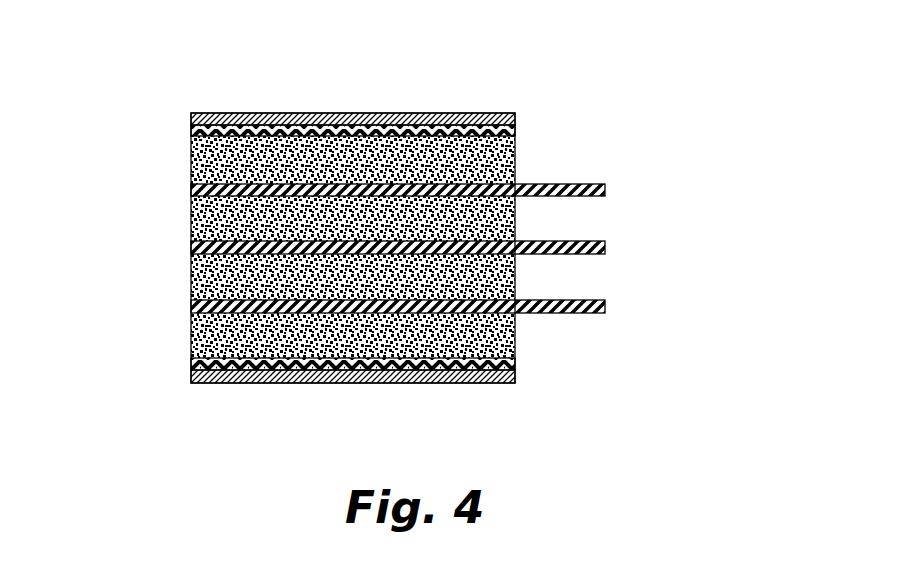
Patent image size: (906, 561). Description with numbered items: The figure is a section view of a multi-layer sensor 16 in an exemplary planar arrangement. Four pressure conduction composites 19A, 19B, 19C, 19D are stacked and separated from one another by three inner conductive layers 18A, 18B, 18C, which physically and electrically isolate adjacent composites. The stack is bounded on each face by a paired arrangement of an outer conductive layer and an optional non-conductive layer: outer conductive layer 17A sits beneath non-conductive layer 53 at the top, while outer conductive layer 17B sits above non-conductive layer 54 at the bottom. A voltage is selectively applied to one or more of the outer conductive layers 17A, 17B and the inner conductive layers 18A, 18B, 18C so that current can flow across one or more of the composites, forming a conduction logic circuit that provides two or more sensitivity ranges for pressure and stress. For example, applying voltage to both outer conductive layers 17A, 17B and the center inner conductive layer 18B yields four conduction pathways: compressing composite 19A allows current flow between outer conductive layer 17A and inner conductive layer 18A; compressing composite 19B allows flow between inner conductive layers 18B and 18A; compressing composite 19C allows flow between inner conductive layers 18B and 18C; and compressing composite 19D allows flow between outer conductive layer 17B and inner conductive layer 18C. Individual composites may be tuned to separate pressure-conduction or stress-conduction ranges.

The multi-layer sensor 16 is at (160, 118).
The non-conductive layer 53 is at (343, 105).
The outer conductive layer 17A is at (509, 119).
The pressure conduction composite 19A is at (182, 152).
The inner conductive layer 18A is at (599, 180).
The pressure conduction composite 19B is at (180, 207).
The inner conductive layer 18B is at (599, 239).
The pressure conduction composite 19C is at (180, 269).
The inner conductive layer 18C is at (599, 297).
The pressure conduction composite 19D is at (182, 322).
The outer conductive layer 17B is at (507, 357).
The non-conductive layer 54 is at (242, 374).